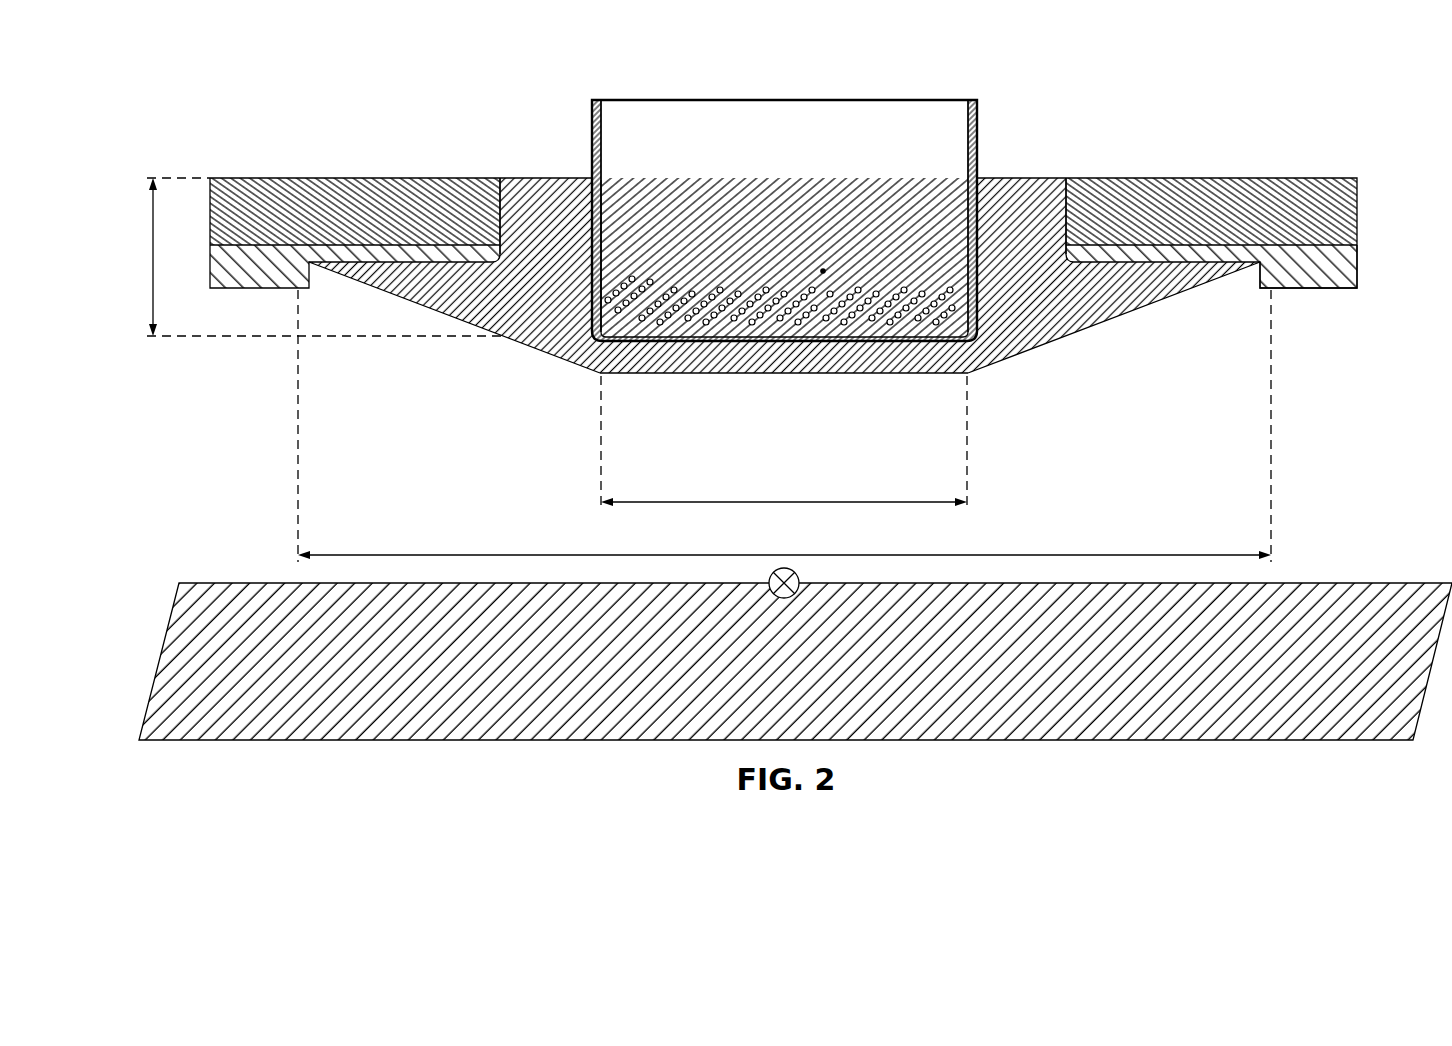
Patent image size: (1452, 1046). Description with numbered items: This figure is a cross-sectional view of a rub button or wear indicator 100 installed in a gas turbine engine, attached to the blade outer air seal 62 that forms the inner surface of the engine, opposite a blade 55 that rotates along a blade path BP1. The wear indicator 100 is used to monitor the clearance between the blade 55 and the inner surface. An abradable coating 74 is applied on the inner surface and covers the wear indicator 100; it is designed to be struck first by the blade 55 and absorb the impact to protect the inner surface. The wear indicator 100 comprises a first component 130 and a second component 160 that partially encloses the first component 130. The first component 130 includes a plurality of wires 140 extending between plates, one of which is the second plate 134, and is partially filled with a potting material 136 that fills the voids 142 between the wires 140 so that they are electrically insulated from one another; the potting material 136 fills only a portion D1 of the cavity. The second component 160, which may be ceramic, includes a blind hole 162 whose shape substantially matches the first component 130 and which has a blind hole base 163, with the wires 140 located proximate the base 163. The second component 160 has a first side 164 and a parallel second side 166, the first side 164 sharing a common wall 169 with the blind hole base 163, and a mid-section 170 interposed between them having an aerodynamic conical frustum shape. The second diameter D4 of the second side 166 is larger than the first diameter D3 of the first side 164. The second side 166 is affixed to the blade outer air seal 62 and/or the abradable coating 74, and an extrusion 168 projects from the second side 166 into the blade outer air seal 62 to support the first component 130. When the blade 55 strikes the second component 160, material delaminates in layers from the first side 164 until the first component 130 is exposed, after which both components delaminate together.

The wear indicator 100 is at (320, 68).
The blade outer air seal 62 is at (819, 209).
The abradable coating 74 is at (1345, 262).
The second side 166 is at (1120, 263).
The extrusion 168 is at (1068, 200).
The second component 160 is at (784, 309).
The mid-section 170 is at (1028, 327).
The first side 164 is at (785, 374).
The common wall 169 is at (866, 362).
The first component 130 is at (782, 188).
The second plate 134 is at (592, 142).
The blind hole base 163 is at (979, 286).
The potting material 136 is at (728, 205).
The blind hole 162 is at (601, 196).
The wire 140 is at (824, 270).
The voids 142 is at (690, 265).
The blade 55 is at (771, 672).
The blade path BP1 is at (795, 594).
The portion D1 is at (153, 258).
The first diameter D3 is at (785, 500).
The second diameter D4 is at (785, 555).